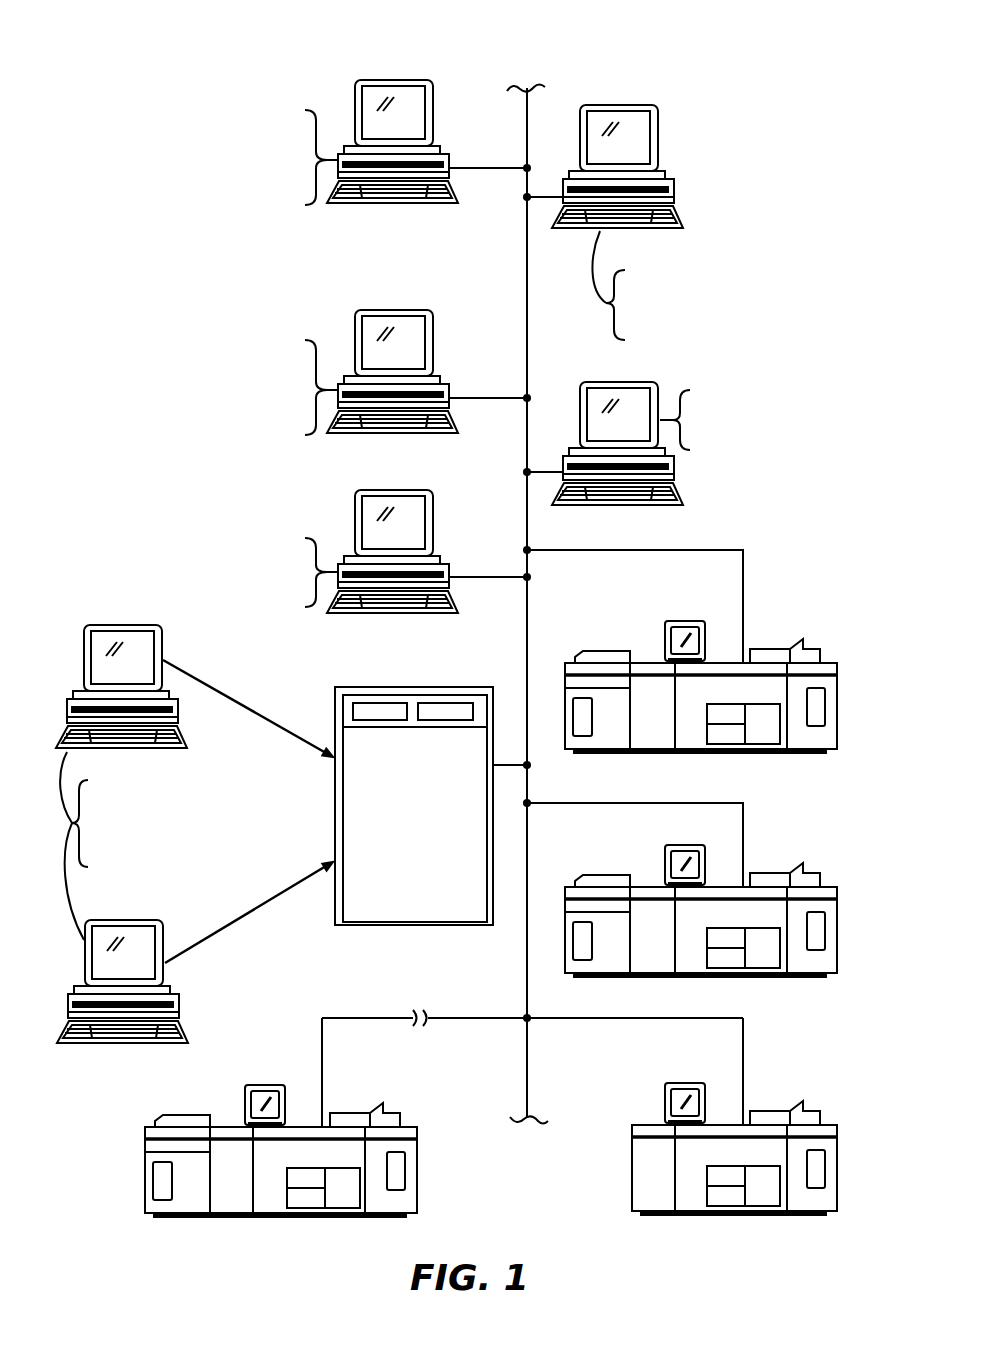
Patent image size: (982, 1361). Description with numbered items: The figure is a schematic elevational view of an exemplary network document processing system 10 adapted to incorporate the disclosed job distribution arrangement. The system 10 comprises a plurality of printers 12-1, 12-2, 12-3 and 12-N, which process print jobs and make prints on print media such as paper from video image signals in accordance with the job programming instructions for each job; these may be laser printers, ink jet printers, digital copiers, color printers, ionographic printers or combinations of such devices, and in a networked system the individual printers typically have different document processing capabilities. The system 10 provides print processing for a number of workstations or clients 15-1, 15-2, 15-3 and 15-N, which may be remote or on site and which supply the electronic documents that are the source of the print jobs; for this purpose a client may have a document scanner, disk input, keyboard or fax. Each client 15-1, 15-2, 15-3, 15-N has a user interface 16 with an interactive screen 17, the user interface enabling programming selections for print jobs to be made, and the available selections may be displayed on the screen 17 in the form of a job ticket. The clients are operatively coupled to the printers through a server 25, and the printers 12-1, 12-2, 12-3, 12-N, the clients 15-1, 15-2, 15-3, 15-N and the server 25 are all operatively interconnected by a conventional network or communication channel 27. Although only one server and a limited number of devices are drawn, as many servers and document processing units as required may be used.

The network document processing system 10 is at (463, 615).
The printer 12-1 is at (635, 640).
The printer 12-2 is at (635, 858).
The printer 12-3 is at (637, 1107).
The printer 12-N is at (460, 1095).
The client 15-1 is at (500, 65).
The client 15-2 is at (500, 295).
The client 15-3 is at (502, 471).
The client 15-N is at (727, 90).
The user interface 16 is at (387, 212).
The interactive screen 17 is at (368, 87).
The server 25 is at (608, 373).
The network 27 is at (522, 212).